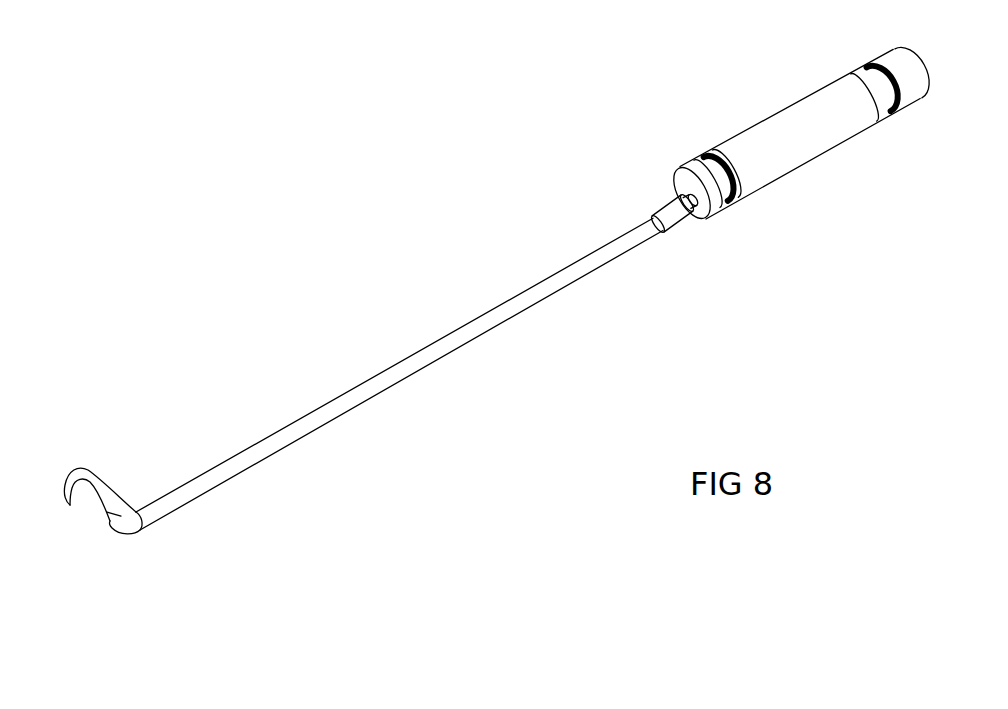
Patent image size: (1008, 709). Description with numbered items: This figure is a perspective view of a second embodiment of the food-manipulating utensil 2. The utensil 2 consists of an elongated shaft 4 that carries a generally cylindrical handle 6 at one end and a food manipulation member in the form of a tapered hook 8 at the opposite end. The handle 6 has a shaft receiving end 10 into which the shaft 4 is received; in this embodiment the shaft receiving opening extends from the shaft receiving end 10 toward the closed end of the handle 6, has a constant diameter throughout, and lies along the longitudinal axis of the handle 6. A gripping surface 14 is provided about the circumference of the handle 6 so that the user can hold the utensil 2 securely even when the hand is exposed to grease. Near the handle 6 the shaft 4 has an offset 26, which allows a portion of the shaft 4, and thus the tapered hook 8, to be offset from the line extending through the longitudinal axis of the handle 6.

The utensil 2 is at (445, 261).
The shaft 4 is at (289, 433).
The handle 6 is at (765, 160).
The tapered hook 8 is at (83, 517).
The shaft receiving end 10 is at (697, 213).
The gripping surface 14 is at (803, 95).
The offset 26 is at (668, 203).